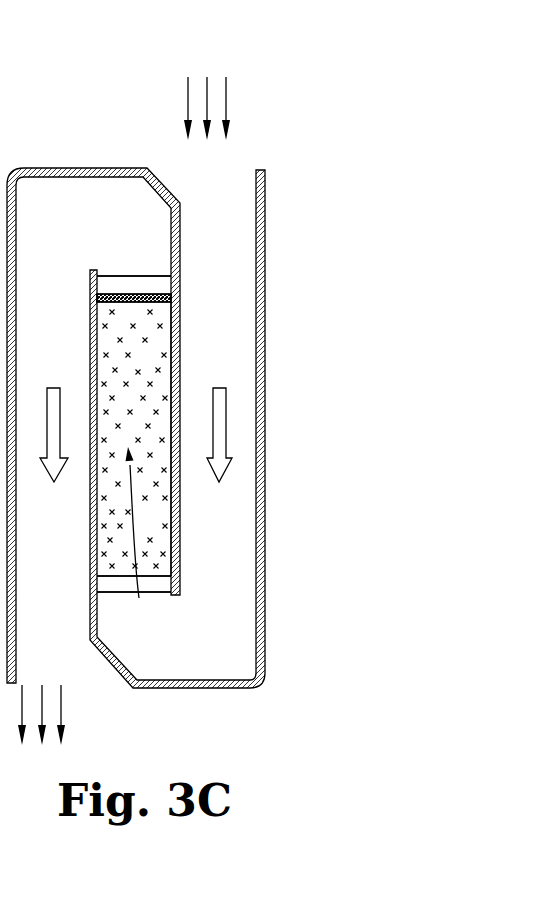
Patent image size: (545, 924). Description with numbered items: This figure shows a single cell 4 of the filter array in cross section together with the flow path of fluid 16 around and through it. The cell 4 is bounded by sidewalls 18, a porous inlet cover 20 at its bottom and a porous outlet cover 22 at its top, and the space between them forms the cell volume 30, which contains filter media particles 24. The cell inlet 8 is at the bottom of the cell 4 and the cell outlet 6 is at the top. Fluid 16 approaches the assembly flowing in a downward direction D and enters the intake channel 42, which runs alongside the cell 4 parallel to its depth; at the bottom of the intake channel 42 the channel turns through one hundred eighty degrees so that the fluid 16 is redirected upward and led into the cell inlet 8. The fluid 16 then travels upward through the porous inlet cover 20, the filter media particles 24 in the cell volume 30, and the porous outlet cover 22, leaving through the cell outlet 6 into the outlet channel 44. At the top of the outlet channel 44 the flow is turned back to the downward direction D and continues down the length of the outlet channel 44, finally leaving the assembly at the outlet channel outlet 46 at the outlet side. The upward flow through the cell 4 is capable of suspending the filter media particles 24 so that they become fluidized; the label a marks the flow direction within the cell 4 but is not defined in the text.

The cell 4 is at (193, 338).
The cell outlet 6 is at (150, 286).
The cell inlet 8 is at (153, 594).
The fluid 16 is at (136, 411).
The sidewalls 18 is at (101, 355).
The porous inlet cover 20 is at (116, 594).
The porous outlet cover 22 is at (118, 296).
The filter media particles 24 is at (176, 495).
The cell volume 30 is at (161, 536).
The intake channel 42 is at (236, 261).
The outlet channel 44 is at (250, 152).
The outlet channel outlet 46 is at (88, 696).
The downward direction D is at (244, 100).
The flow direction in tube a is at (139, 607).